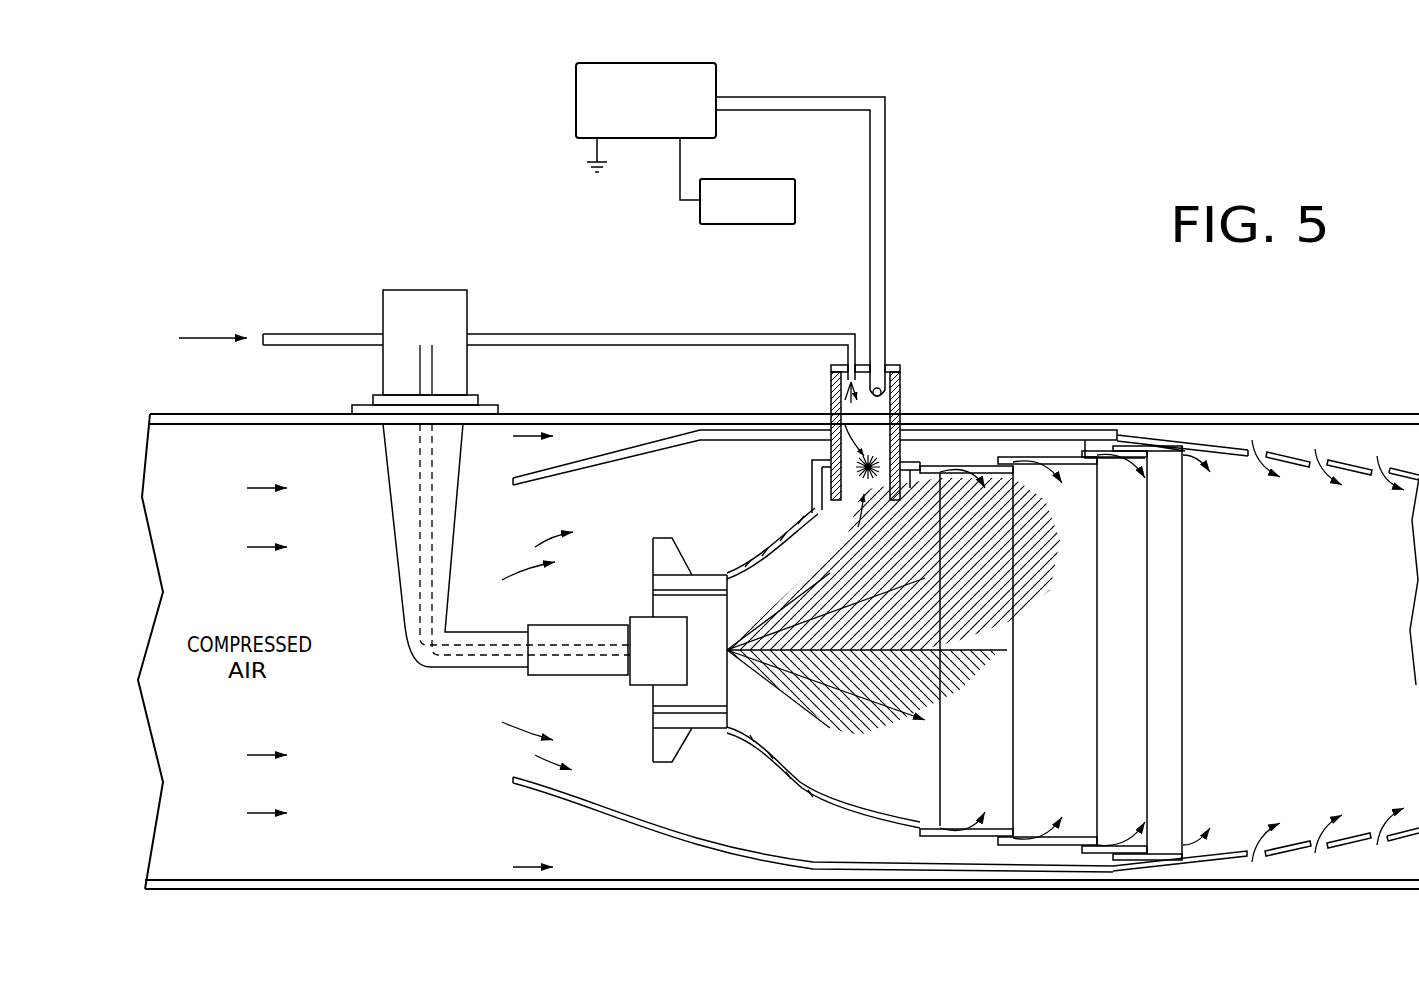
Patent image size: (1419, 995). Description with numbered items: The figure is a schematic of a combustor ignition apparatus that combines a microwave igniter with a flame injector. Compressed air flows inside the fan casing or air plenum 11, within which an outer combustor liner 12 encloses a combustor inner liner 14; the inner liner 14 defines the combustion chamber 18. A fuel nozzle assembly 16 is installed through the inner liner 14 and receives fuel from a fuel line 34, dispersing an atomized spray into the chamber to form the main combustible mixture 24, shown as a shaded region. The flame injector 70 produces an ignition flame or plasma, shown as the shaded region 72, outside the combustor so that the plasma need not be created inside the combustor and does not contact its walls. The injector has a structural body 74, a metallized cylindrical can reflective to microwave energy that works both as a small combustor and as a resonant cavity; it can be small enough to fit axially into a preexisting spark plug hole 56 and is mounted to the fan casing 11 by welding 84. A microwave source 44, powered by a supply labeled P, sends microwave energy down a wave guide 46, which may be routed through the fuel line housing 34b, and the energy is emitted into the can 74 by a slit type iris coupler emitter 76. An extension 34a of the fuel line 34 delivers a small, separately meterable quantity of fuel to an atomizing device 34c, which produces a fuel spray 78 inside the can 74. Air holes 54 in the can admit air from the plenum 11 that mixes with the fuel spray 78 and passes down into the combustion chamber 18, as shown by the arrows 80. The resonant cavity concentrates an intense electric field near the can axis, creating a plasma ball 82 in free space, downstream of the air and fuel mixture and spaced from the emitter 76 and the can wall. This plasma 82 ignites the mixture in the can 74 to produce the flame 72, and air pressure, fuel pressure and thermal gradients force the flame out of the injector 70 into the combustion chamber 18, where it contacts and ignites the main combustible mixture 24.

The fan casing 11 is at (225, 411).
The outer combustor liner 12 is at (578, 808).
The combustor inner liner 14 is at (863, 812).
The fuel nozzle assembly 16 is at (488, 700).
The combustion chamber 18 is at (1310, 654).
The main combustible mixture 24 is at (917, 680).
The fuel line 34 is at (333, 345).
The fuel line extension 34a is at (697, 333).
The fuel line housing 34b is at (392, 526).
The atomizing device 34c is at (867, 362).
The microwave source 44 is at (633, 62).
The wave guide 46 is at (788, 96).
The air holes 54 is at (830, 447).
The spark plug hole 56 is at (985, 428).
The flame injector 70 is at (893, 382).
The flame 72 is at (1033, 587).
The structural body 74 is at (905, 370).
The iris coupler emitter 76 is at (903, 388).
The fuel spray 78 is at (833, 390).
The air flow arrows 80 is at (872, 442).
The plasma ball 82 is at (815, 522).
The welding 84 is at (820, 412).
The power supply P is at (715, 180).